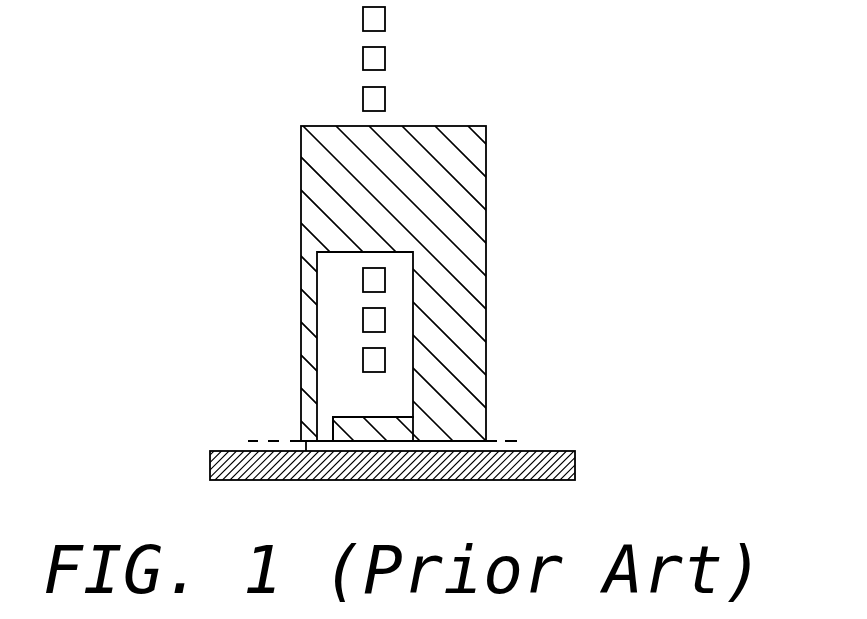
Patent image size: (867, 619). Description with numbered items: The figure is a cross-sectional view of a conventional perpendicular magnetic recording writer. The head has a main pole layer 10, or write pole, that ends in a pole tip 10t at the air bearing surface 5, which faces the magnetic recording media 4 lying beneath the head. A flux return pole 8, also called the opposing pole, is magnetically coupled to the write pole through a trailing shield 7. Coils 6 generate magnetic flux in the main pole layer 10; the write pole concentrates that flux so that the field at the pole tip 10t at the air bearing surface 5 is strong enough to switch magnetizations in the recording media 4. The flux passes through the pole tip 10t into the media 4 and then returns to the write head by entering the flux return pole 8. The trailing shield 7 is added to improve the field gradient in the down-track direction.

The magnetic recording media 4 is at (210, 457).
The air bearing surface 5 is at (384, 442).
The coils 6 is at (373, 280).
The trailing shield 7 is at (475, 322).
The flux return pole 8 is at (397, 432).
The main pole layer 10 is at (301, 412).
The pole tip 10t is at (307, 452).